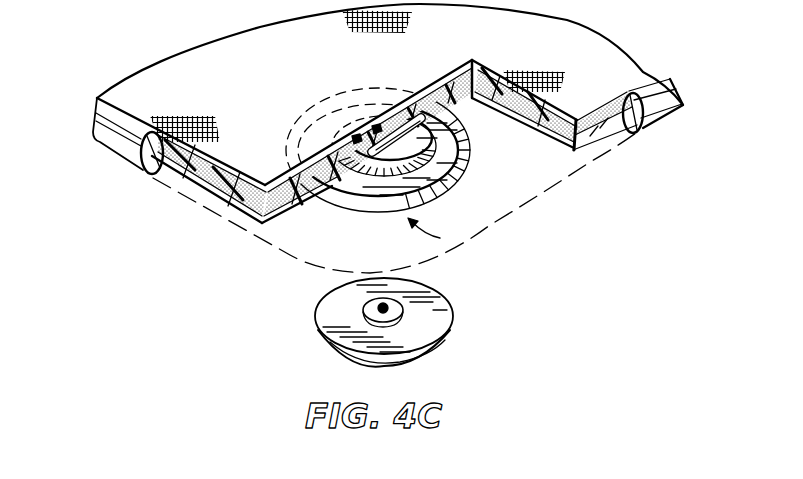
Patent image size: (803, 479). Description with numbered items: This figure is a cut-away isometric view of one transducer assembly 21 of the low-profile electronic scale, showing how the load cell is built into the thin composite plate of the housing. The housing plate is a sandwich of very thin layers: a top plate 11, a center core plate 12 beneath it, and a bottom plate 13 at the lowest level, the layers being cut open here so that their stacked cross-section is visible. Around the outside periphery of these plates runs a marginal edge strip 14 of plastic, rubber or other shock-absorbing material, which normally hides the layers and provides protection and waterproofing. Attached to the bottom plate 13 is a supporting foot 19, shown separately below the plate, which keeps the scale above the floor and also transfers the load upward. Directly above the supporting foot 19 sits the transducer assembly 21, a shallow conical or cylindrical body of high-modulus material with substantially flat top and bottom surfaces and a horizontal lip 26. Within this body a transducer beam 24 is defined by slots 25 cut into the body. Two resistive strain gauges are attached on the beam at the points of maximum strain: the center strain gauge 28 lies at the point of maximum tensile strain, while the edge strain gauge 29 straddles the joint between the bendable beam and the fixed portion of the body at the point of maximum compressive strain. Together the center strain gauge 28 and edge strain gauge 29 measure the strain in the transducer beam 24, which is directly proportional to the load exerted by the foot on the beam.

The top plate 11 is at (565, 112).
The center core plate 12 is at (600, 144).
The bottom plate 13 is at (570, 158).
The marginal edge strip 14 is at (658, 113).
The supporting foot 19 is at (430, 352).
The transducer assembly 21 is at (466, 234).
The transducer beam 24 is at (442, 134).
The slots 25 is at (447, 147).
The horizontal lip 26 is at (342, 190).
The center strain gauge 28 is at (373, 125).
The edge strain gauge 29 is at (358, 138).